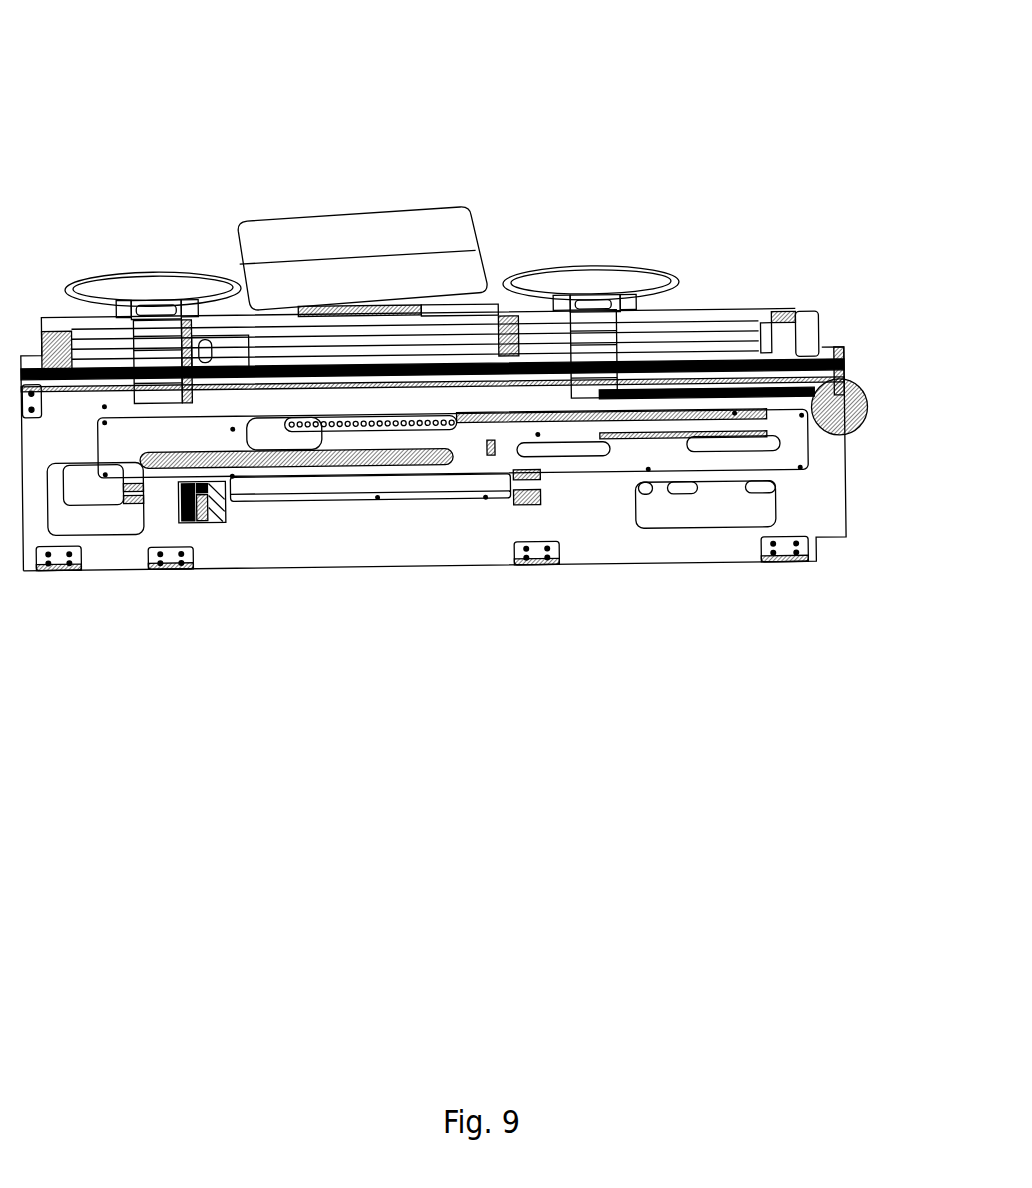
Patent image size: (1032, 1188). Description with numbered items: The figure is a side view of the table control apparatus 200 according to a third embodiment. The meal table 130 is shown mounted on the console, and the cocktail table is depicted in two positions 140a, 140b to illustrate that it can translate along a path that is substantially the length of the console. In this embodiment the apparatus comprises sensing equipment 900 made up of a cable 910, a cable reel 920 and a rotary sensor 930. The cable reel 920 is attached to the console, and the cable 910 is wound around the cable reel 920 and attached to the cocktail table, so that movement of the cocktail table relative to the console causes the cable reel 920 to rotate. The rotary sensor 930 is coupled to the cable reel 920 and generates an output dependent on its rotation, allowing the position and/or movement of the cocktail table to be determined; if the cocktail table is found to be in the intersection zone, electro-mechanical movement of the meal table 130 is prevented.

The table control apparatus 200 is at (218, 133).
The meal table 130 is at (314, 239).
The cocktail table first position 140a is at (128, 284).
The cocktail table second position 140b is at (567, 285).
The sensing equipment 900 is at (810, 453).
The cable 910 is at (767, 401).
The cable reel 920 is at (868, 405).
The rotary sensor 930 is at (818, 400).